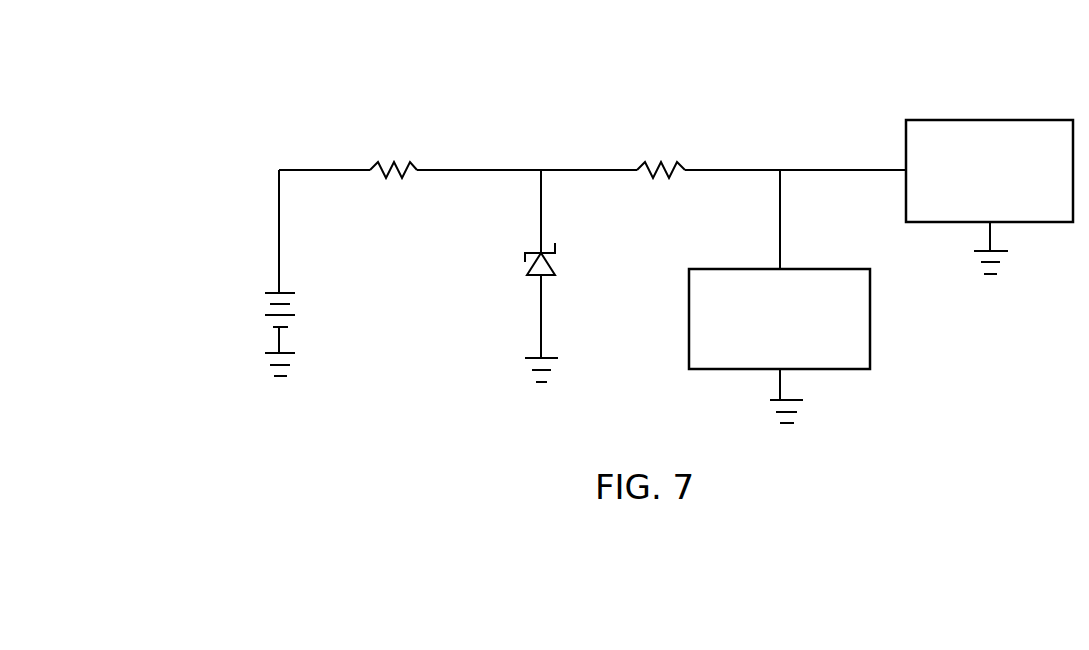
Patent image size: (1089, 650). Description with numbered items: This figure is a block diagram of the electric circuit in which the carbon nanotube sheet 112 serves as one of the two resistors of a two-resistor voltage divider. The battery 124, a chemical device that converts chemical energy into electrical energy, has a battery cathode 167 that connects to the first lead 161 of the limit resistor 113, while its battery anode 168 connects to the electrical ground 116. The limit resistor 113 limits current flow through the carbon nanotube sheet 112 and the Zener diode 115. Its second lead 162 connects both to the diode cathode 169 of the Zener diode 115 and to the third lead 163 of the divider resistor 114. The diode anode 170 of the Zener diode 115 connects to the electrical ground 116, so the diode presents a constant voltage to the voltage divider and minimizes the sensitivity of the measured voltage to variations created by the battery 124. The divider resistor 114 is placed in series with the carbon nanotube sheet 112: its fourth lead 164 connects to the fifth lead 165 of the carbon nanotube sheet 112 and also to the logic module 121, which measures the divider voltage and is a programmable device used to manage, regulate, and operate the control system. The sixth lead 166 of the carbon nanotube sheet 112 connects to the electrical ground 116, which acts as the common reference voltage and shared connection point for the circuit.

The carbon nanotube sheet 112 is at (871, 315).
The limit resistor 113 is at (392, 162).
The divider resistor 114 is at (661, 162).
The Zener diode 115 is at (520, 261).
The electrical ground 116 is at (522, 372).
The logic module 121 is at (994, 120).
The battery 124 is at (297, 304).
The first lead 161 is at (343, 170).
The second lead 162 is at (448, 170).
The third lead 163 is at (613, 170).
The fourth lead 164 is at (717, 170).
The fifth lead 165 is at (780, 210).
The sixth lead 166 is at (780, 383).
The battery cathode 167 is at (279, 232).
The battery anode 168 is at (297, 365).
The diode cathode 169 is at (541, 200).
The diode anode 170 is at (543, 283).